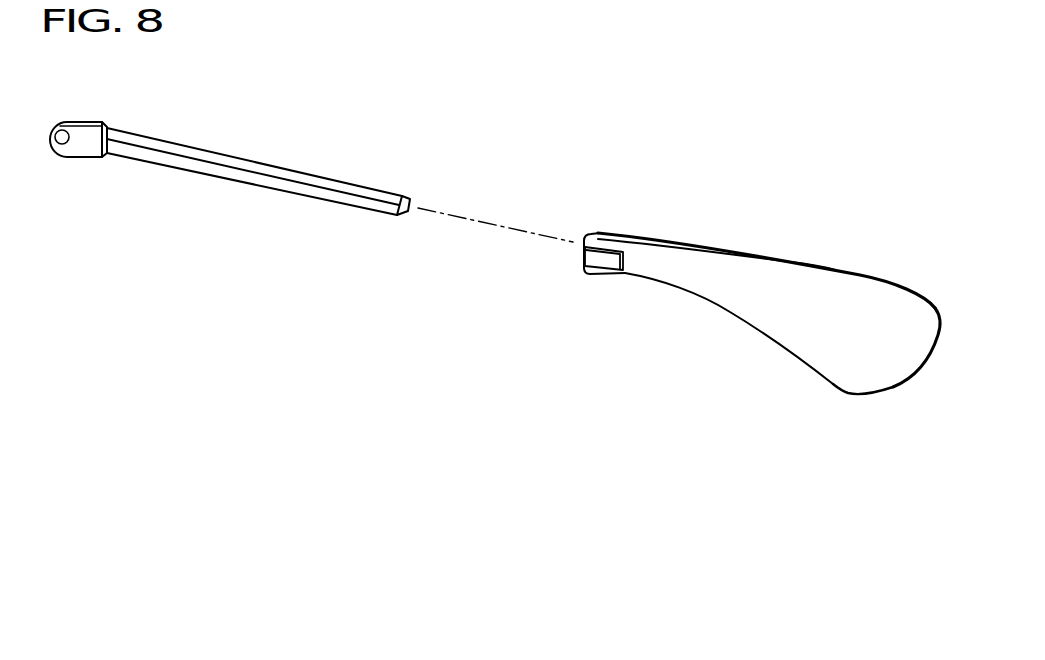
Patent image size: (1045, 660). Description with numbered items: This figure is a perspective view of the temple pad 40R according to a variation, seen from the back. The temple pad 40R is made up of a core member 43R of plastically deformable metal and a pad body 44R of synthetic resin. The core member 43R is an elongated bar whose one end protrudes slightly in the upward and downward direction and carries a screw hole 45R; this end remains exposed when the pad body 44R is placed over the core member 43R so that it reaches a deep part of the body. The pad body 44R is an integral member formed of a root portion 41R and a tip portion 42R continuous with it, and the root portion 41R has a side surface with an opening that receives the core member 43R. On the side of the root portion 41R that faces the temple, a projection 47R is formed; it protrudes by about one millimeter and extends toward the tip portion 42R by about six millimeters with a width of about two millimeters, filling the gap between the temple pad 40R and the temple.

The temple pad 40R is at (420, 94).
The root portion 41R is at (602, 273).
The tip portion 42R is at (835, 353).
The core member 43R is at (290, 187).
The pad body 44R is at (748, 343).
The screw hole 45R is at (63, 143).
The projection 47R is at (590, 257).